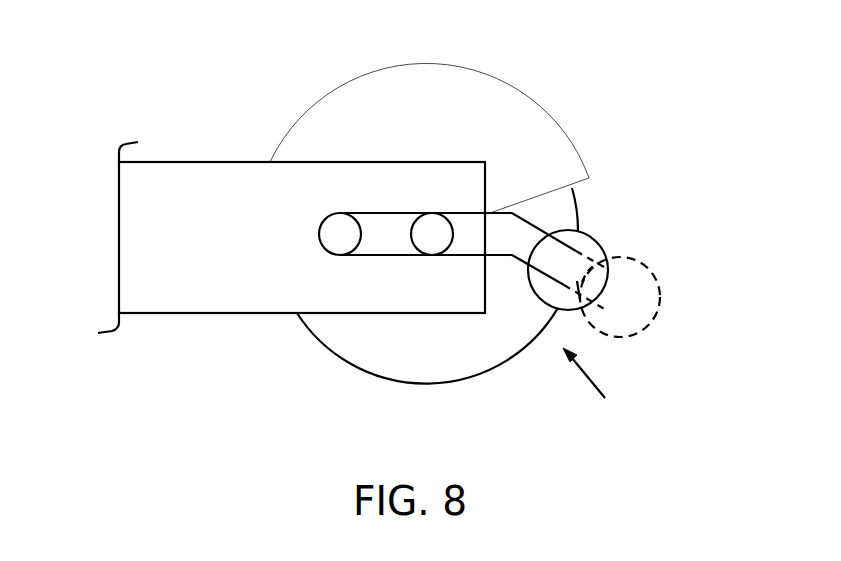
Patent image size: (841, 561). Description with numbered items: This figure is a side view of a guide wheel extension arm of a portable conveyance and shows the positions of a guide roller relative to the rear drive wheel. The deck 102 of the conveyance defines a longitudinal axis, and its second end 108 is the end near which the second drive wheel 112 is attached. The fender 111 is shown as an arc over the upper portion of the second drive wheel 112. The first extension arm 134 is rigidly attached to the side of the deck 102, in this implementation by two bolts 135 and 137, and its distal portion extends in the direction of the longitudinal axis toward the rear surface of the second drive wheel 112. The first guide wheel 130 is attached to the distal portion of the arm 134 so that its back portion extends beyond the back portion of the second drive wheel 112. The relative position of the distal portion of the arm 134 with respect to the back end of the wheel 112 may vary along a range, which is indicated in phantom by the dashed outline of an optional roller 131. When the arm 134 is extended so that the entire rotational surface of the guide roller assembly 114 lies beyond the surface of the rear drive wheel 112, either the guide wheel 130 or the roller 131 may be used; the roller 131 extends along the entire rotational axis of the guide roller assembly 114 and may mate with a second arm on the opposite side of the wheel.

The deck 102 is at (123, 223).
The second end 108 is at (290, 282).
The fender 111 is at (490, 77).
The second drive wheel 112 is at (333, 346).
The guide roller assembly 114 is at (605, 398).
The first guide wheel 130 is at (597, 242).
The roller 131 is at (657, 280).
The first extension arm 134 is at (518, 256).
The bolt 135 is at (430, 240).
The bolt 137 is at (330, 233).